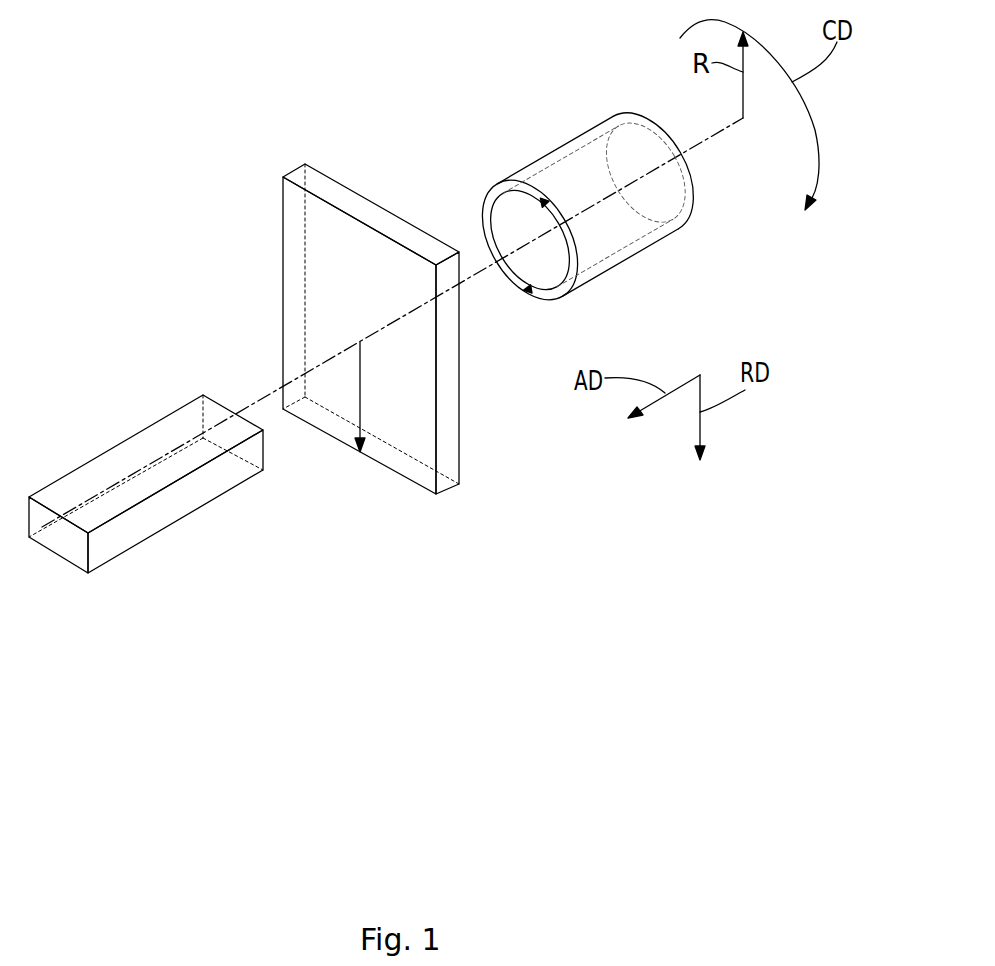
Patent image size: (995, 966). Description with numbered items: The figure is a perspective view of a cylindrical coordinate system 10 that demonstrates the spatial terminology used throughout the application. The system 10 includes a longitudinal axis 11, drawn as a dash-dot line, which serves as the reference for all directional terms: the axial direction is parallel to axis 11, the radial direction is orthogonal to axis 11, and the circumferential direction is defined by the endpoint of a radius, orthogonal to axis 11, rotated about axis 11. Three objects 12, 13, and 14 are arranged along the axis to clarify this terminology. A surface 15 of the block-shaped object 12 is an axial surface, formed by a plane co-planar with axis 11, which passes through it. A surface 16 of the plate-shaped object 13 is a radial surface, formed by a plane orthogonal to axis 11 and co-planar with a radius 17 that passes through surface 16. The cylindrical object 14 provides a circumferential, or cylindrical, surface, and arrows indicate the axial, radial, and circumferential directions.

The cylindrical coordinate system 10 is at (232, 208).
The longitudinal axis 11 is at (681, 153).
The object 12 is at (146, 514).
The object 13 is at (370, 353).
The object 14 is at (558, 215).
The axial surface 15 is at (108, 467).
The radial surface 16 is at (297, 290).
The radius 17 is at (361, 392).